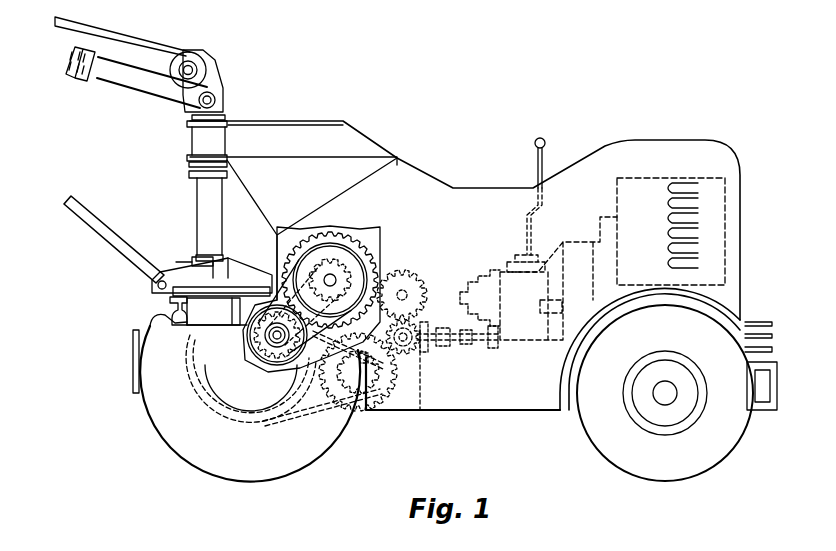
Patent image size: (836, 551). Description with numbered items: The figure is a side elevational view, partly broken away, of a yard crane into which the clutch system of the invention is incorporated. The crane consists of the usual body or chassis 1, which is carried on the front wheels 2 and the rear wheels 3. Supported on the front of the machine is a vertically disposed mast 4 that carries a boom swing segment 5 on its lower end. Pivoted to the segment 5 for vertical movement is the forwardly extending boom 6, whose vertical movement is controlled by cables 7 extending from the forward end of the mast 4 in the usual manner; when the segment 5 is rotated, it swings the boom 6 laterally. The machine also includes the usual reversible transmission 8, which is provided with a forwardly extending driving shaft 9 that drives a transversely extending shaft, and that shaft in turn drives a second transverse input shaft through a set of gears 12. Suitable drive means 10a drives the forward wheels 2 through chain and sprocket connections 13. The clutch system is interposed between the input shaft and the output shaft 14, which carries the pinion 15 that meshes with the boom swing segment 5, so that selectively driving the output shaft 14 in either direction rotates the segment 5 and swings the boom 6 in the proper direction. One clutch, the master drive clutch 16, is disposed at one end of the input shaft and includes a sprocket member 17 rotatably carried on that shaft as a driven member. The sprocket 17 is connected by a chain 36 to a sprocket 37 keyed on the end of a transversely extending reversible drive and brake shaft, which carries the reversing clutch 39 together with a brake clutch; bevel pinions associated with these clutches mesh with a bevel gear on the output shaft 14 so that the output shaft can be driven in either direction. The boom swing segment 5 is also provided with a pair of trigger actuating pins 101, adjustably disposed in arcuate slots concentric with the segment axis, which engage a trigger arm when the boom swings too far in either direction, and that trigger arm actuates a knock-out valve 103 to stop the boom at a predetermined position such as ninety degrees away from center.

The body or chassis 1 is at (490, 393).
The front wheels 2 is at (316, 441).
The rear wheels 3 is at (600, 425).
The mast 4 is at (208, 197).
The boom swing segment 5 is at (238, 281).
The boom 6 is at (105, 232).
The cables 7 is at (166, 47).
The reversible transmission 8 is at (513, 343).
The driving shaft 9 is at (416, 326).
The drive means 10a is at (411, 380).
The set of gears 12 is at (418, 276).
The chain and sprocket connections 13 is at (347, 405).
The output shaft 14 is at (256, 302).
The pinion 15 is at (258, 288).
The master drive clutch 16 is at (355, 262).
The sprocket member 17 is at (292, 268).
The chain 36 is at (262, 339).
The sprocket 37 is at (272, 348).
The reversing clutch 39 is at (307, 331).
The trigger actuating pins 101 is at (191, 258).
The knock-out valve 103 is at (172, 306).